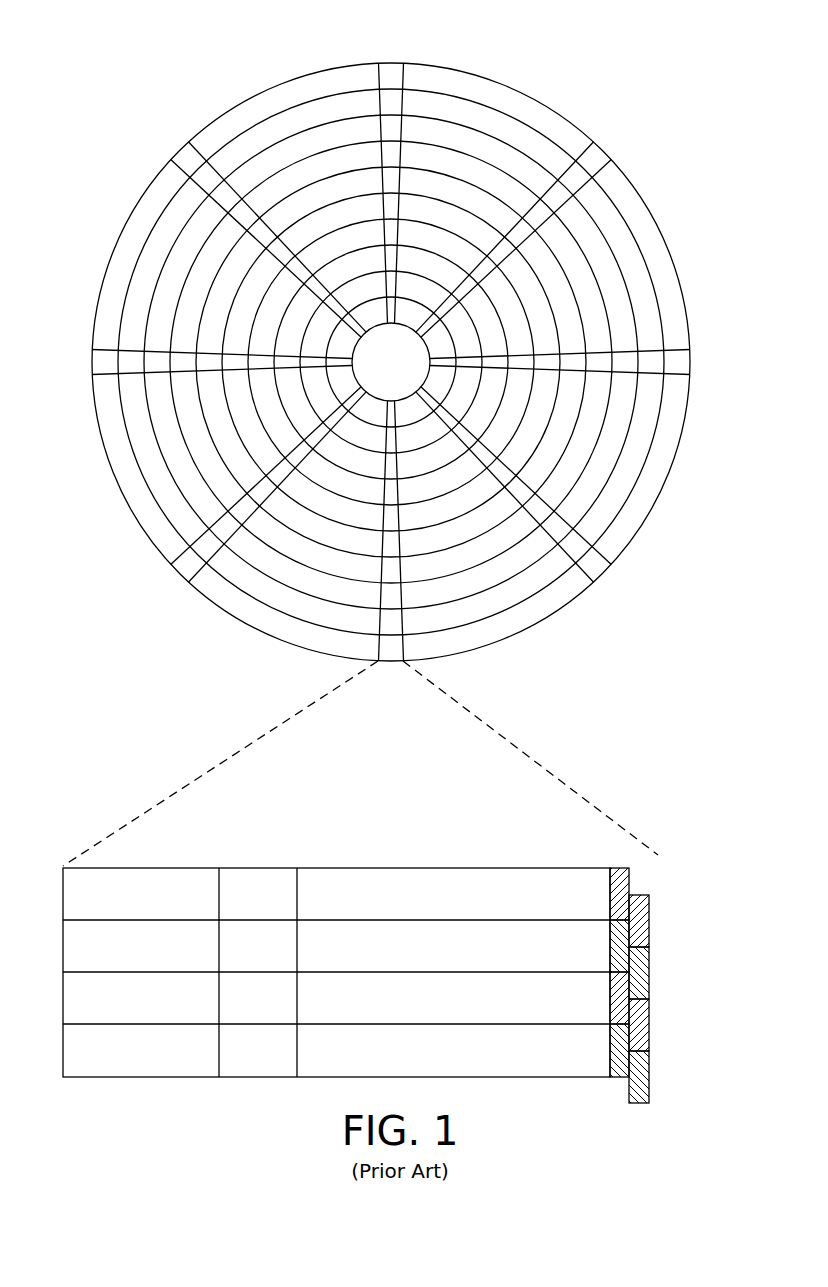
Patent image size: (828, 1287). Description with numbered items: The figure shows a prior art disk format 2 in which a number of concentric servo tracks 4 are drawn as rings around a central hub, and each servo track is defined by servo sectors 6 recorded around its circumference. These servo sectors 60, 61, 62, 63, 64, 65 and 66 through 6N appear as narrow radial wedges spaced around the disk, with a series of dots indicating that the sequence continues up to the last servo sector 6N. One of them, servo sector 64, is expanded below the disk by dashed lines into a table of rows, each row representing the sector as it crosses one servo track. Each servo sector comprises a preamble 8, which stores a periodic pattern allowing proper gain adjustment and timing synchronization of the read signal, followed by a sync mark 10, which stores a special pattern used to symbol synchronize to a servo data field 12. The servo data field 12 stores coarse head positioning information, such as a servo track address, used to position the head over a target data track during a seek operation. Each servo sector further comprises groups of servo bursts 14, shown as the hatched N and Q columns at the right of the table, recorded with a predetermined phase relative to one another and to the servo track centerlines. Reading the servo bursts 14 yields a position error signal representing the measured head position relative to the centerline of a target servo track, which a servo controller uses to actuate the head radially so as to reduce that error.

The disk format 2 is at (172, 65).
The servo track 4 is at (496, 122).
The servo sector 6 is at (390, 368).
The servo sector 60 is at (393, 70).
The servo sector 61 is at (596, 160).
The servo sector 62 is at (684, 363).
The servo sector 63 is at (598, 577).
The servo sector 64 is at (257, 728).
The servo sector 65 is at (183, 572).
The servo sector 66 is at (92, 361).
The servo sector 6N is at (185, 155).
The preamble 8 is at (148, 868).
The sync mark 10 is at (260, 868).
The servo data field 12 is at (441, 868).
The servo bursts 14 is at (645, 870).